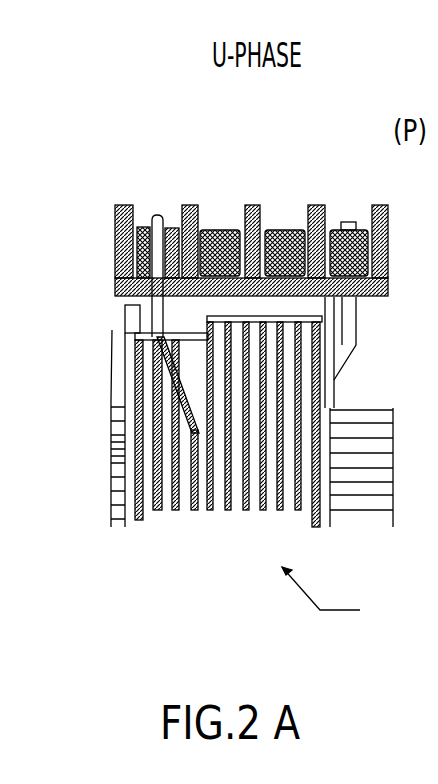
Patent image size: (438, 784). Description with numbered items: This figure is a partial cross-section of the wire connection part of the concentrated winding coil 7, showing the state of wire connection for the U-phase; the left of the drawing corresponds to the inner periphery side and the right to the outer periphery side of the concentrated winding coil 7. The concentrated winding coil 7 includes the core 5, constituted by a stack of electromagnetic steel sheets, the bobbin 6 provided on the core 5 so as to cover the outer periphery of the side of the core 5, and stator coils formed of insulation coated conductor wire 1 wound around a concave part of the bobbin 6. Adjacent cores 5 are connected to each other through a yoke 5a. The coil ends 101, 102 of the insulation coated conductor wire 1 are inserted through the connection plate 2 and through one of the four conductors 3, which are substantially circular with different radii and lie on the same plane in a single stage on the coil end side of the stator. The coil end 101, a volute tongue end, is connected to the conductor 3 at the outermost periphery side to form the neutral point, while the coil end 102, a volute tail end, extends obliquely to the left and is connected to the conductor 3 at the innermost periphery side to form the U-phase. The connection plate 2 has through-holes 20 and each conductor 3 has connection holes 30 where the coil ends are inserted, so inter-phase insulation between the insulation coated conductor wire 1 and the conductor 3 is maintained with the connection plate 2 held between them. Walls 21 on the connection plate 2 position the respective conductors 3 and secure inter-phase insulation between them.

The insulation coated conductor wire 1 is at (235, 512).
The connection plate 2 is at (362, 298).
The conductor 3 is at (117, 210).
The core 5 is at (110, 432).
The yoke 5a is at (383, 456).
The bobbin 6 is at (110, 450).
The concentrated winding coil 7 is at (321, 587).
The through-hole 20 is at (128, 299).
The wall 21 is at (265, 228).
The connection hole 30 is at (155, 222).
The coil end 101 is at (342, 343).
The coil end 102 is at (124, 328).